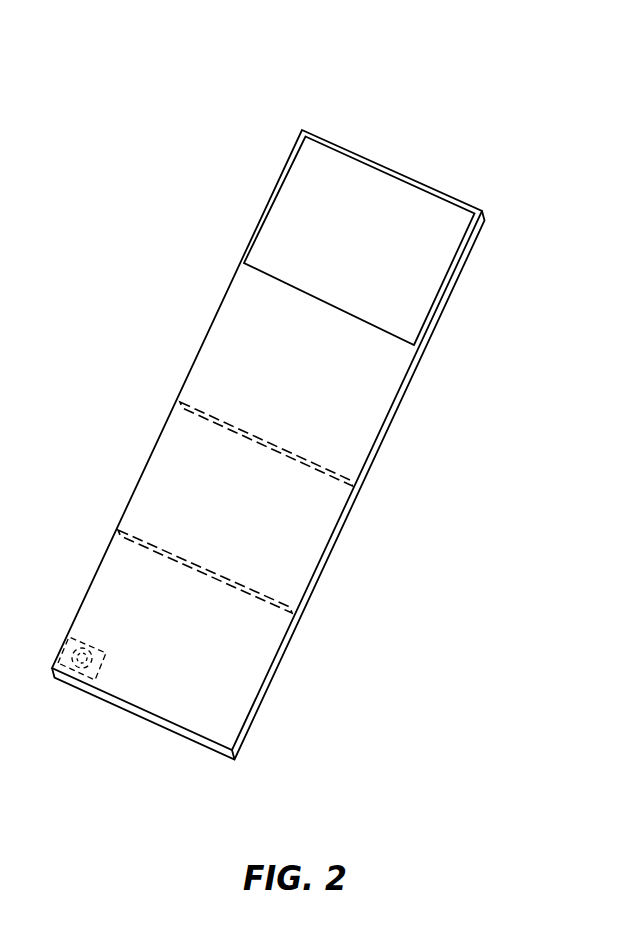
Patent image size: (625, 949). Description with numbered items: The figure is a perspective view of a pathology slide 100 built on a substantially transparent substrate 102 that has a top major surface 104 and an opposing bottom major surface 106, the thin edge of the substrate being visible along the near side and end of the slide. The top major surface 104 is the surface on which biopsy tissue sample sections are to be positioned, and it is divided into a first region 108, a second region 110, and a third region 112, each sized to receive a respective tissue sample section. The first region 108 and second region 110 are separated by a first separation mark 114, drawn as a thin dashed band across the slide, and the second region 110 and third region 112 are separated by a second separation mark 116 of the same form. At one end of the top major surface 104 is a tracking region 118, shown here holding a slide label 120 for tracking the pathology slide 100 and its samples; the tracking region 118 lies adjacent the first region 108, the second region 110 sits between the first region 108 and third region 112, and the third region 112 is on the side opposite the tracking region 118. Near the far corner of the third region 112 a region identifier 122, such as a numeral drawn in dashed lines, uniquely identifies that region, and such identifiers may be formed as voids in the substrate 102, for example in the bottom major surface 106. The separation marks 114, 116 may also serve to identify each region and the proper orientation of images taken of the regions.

The pathology slide 100 is at (235, 102).
The substantially transparent substrate 102 is at (158, 712).
The top major surface 104 is at (97, 592).
The bottom major surface 106 is at (215, 764).
The first region 108 is at (340, 422).
The second region 110 is at (280, 540).
The third region 112 is at (228, 674).
The first separation mark 114 is at (208, 412).
The second separation mark 116 is at (147, 540).
The tracking region 118 is at (279, 228).
The slide label 120 is at (305, 181).
The region identifiers 122 is at (53, 689).